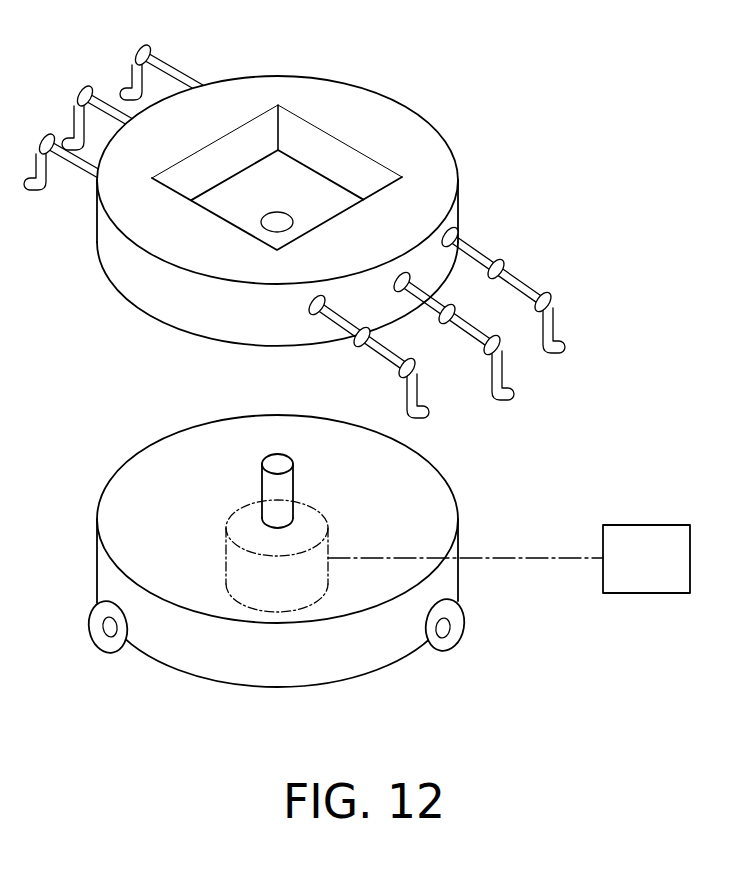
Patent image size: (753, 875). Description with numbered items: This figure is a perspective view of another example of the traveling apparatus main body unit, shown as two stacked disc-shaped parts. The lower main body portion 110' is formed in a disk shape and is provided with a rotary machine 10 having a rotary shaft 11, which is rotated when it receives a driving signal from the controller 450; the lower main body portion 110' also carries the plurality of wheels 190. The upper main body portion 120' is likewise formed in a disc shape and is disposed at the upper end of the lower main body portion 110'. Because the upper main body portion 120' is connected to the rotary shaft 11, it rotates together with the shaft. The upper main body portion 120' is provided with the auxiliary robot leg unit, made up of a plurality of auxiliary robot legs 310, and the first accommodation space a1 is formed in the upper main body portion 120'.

The upper main body portion 120' is at (288, 195).
The first accommodation space a1 is at (297, 187).
The auxiliary robot legs 310 is at (540, 268).
The lower main body portion 110' is at (277, 584).
The wheels 190 is at (112, 642).
The rotary machine 10 is at (227, 525).
The rotary shaft 11 is at (274, 483).
The controller 450 is at (667, 525).